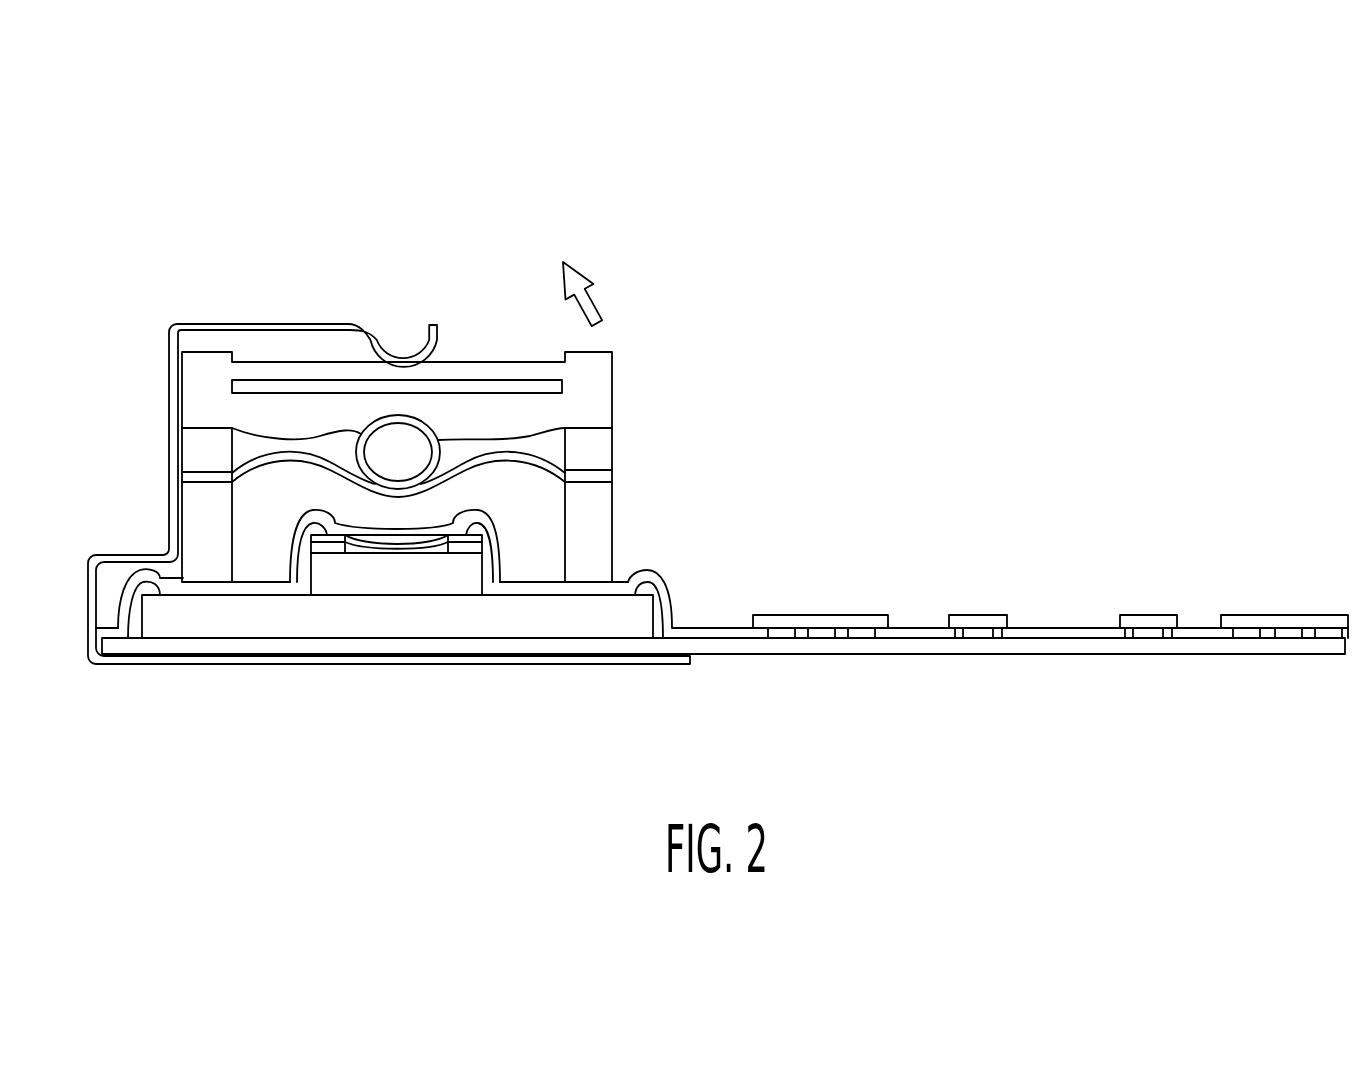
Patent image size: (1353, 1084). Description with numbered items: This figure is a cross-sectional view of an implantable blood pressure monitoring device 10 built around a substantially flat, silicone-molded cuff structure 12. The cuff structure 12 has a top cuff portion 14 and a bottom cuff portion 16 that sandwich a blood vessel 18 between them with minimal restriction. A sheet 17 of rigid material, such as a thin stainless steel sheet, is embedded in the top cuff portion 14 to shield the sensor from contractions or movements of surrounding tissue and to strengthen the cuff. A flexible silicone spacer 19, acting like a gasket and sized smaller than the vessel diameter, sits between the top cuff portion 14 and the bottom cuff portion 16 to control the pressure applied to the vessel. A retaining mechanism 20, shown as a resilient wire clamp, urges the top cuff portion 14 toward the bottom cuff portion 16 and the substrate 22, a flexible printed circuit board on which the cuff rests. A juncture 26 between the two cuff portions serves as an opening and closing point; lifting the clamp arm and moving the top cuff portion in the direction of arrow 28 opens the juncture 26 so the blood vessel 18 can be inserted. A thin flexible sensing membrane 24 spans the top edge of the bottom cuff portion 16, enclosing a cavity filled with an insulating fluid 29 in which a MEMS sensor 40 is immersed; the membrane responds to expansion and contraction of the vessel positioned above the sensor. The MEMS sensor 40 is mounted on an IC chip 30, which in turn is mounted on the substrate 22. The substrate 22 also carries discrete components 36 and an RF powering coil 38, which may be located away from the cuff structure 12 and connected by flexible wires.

The implantable blood pressure monitoring device 10 is at (927, 352).
The cuff structure 12 is at (620, 333).
The top cuff portion 14 is at (612, 385).
The bottom cuff portion 16 is at (612, 512).
The sheet of rigid material 17 is at (458, 382).
The blood vessel 18 is at (445, 445).
The spacer 19 is at (600, 443).
The retaining mechanism 20 is at (318, 325).
The substrate 22 is at (710, 645).
The sensing membrane 24 is at (255, 458).
The juncture 26 is at (622, 476).
The arrow 28 is at (593, 302).
The insulating fluid 29 is at (263, 560).
The IC chip 30 is at (567, 620).
The discrete components 36 is at (980, 627).
The RF powering coil 38 is at (857, 627).
The MEMS sensor 40 is at (467, 571).